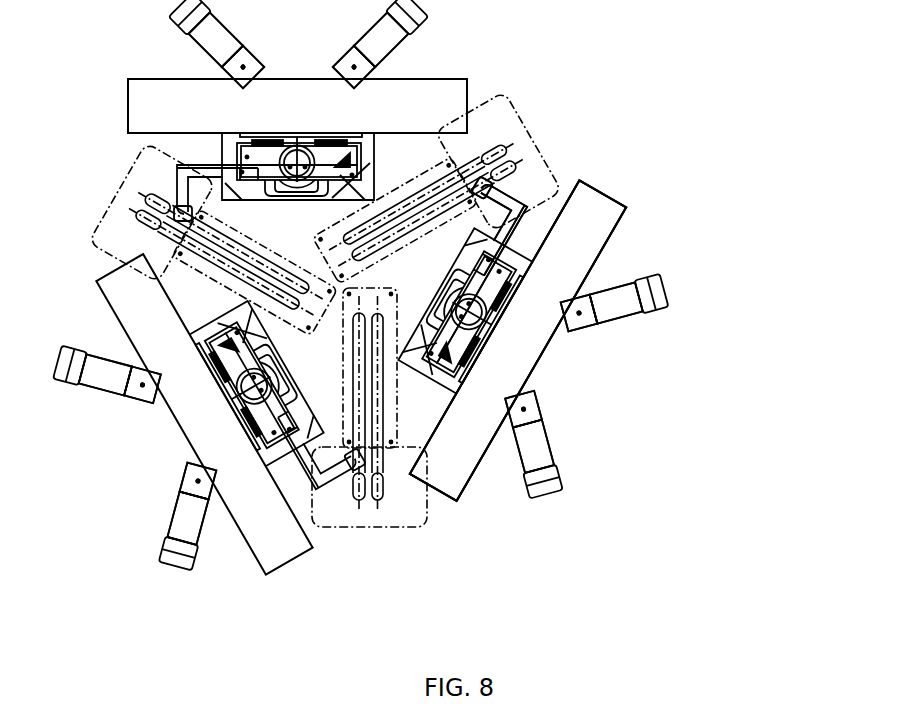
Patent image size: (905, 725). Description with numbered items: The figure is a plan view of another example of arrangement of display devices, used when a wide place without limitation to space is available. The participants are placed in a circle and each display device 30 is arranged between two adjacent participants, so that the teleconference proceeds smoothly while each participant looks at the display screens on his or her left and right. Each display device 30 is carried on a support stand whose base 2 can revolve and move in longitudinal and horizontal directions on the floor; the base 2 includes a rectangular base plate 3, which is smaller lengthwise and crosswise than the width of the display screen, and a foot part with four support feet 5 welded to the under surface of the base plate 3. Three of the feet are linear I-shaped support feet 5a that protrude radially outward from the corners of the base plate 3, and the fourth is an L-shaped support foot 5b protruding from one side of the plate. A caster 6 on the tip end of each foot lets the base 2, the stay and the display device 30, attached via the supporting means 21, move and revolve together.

The base 2 is at (599, 347).
The base plate 3 is at (561, 373).
The display device 30 is at (432, 88).
The support feet 5 is at (613, 312).
The I-shaped support feet 5a is at (360, 284).
The L-shaped support foot 5b is at (528, 185).
The casters 6 is at (533, 152).
The supporting means 21 is at (520, 256).